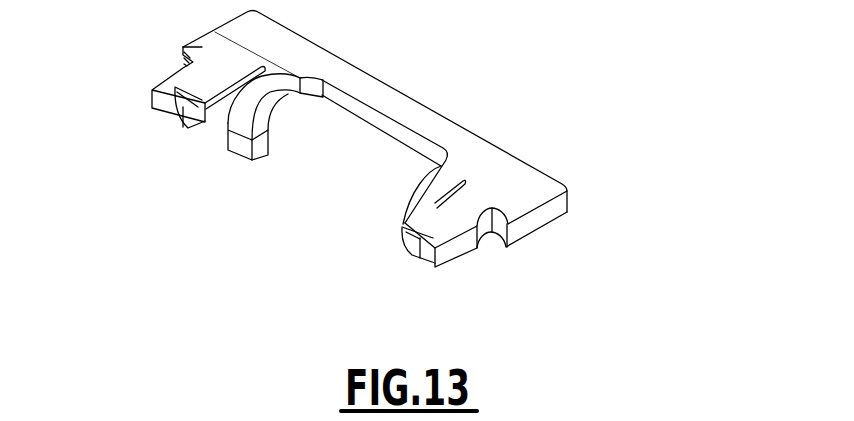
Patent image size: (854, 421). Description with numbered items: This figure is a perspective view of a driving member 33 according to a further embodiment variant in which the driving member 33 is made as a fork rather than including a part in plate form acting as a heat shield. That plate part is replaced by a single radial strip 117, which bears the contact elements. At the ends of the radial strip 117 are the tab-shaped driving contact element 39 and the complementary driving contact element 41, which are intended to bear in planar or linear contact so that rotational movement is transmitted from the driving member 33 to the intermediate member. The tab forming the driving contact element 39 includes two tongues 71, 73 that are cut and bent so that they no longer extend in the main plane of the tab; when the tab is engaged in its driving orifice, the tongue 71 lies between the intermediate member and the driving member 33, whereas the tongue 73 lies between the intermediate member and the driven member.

The driving member 33 is at (637, 112).
The driving contact element 39 is at (185, 46).
The complementary driving contact element 41 is at (467, 218).
The tongue 71 is at (232, 150).
The tongue 73 is at (176, 113).
The radial strip 117 is at (410, 106).